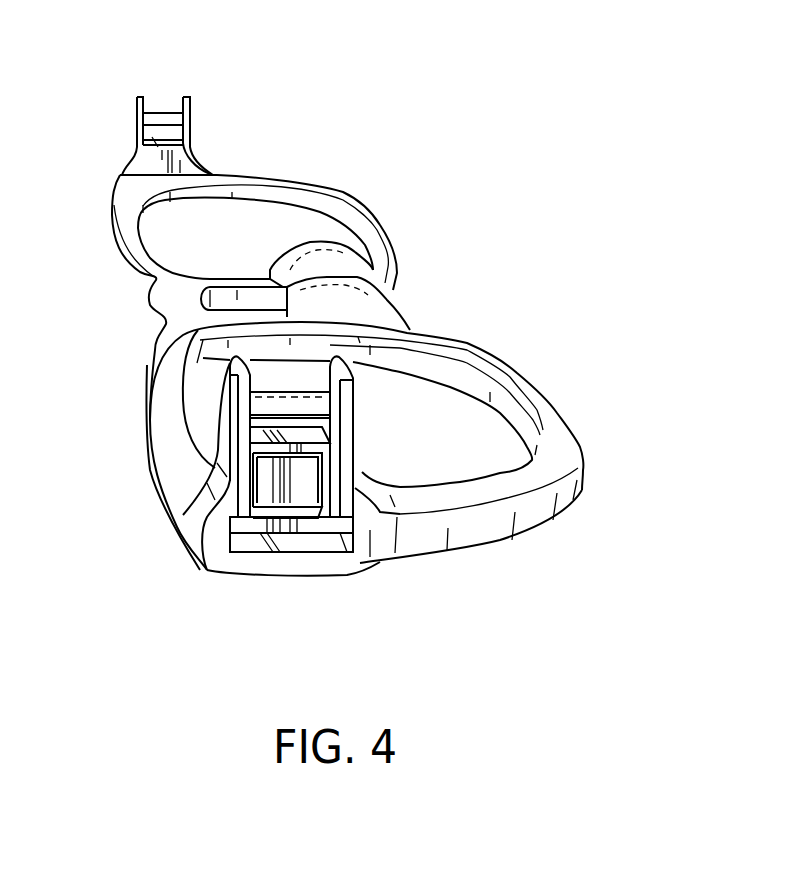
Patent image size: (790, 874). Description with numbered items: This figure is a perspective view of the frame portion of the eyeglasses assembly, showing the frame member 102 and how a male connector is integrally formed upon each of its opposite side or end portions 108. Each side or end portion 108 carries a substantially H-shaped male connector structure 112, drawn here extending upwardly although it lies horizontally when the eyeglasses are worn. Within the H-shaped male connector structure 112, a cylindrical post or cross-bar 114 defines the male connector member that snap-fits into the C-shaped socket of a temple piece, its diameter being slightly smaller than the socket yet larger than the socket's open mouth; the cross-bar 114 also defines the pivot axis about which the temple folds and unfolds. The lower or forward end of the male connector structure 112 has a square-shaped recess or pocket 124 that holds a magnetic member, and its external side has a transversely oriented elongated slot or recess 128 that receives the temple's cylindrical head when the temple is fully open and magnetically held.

The frame member 102 is at (567, 487).
The side or end portion 108 is at (185, 167).
The H-shaped male connector structure 112 is at (360, 410).
The cylindrical post or cross-bar 114 is at (290, 393).
The square-shaped recess or pocket 124 is at (297, 470).
The transversely oriented elongated slot or recess 128 is at (313, 547).